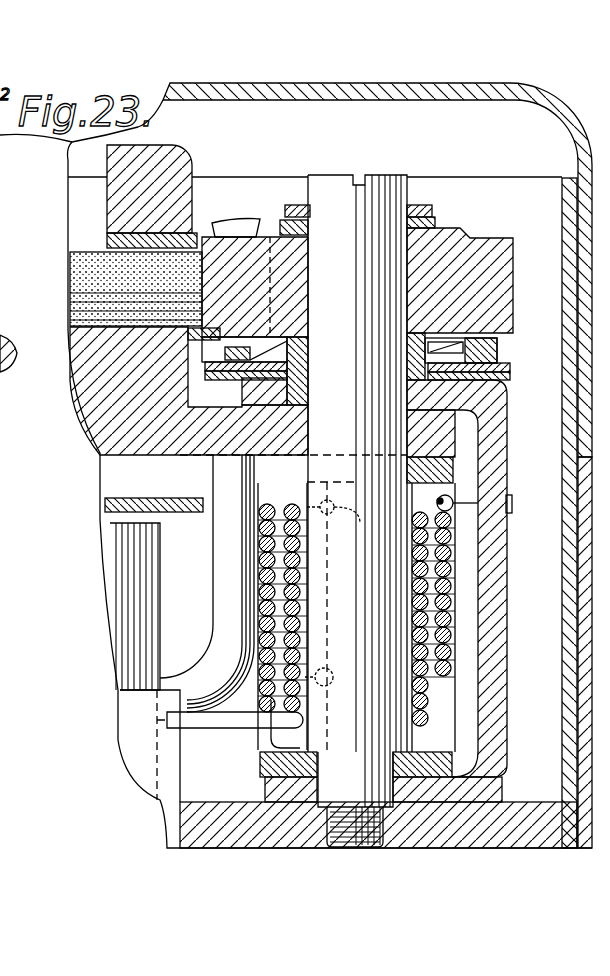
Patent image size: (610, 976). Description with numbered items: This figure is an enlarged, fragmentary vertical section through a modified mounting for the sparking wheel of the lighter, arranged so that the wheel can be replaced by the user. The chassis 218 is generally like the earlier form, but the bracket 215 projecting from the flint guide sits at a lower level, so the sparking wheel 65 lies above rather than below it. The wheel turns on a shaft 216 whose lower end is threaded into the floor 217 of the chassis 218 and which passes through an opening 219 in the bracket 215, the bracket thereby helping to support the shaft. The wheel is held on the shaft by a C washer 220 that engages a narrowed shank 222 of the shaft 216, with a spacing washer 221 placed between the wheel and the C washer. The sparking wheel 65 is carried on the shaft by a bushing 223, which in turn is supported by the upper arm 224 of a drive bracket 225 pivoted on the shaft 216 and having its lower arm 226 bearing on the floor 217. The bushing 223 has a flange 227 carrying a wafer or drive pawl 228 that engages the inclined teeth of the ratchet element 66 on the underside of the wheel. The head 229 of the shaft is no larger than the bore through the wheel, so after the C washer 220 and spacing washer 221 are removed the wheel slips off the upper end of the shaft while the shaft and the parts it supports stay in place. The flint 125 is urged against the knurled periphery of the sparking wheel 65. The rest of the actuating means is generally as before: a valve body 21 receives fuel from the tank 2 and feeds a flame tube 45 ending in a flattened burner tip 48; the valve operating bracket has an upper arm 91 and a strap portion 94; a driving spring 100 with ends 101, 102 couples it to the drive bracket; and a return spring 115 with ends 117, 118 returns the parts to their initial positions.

The tank 2 is at (10, 594).
The valve body 21 is at (140, 641).
The flame tube 45 is at (222, 584).
The burner tip 48 is at (233, 222).
The sparking wheel 65 is at (495, 277).
The ratchet element 66 is at (222, 348).
The upper arm 91 is at (452, 473).
The strap portion 94 is at (262, 745).
The driving spring 100 is at (452, 584).
The spring end 101 is at (514, 500).
The spring end 102 is at (333, 672).
The return spring 115 is at (452, 708).
The spring end 117 is at (223, 720).
The spring end 118 is at (344, 526).
The flint 125 is at (78, 267).
The bracket 215 is at (438, 437).
The shaft 216 is at (380, 277).
The floor 217 is at (512, 813).
The chassis 218 is at (95, 446).
The opening 219 is at (487, 383).
The C washer 220 is at (432, 217).
The spacing washer 221 is at (435, 223).
The narrowed shank 222 is at (300, 208).
The bushing 223 is at (445, 336).
The upper arm 224 is at (257, 402).
The drive bracket 225 is at (504, 661).
The lower arm 226 is at (457, 776).
The flange 227 is at (538, 360).
The drive pawl 228 is at (205, 362).
The head 229 is at (387, 177).